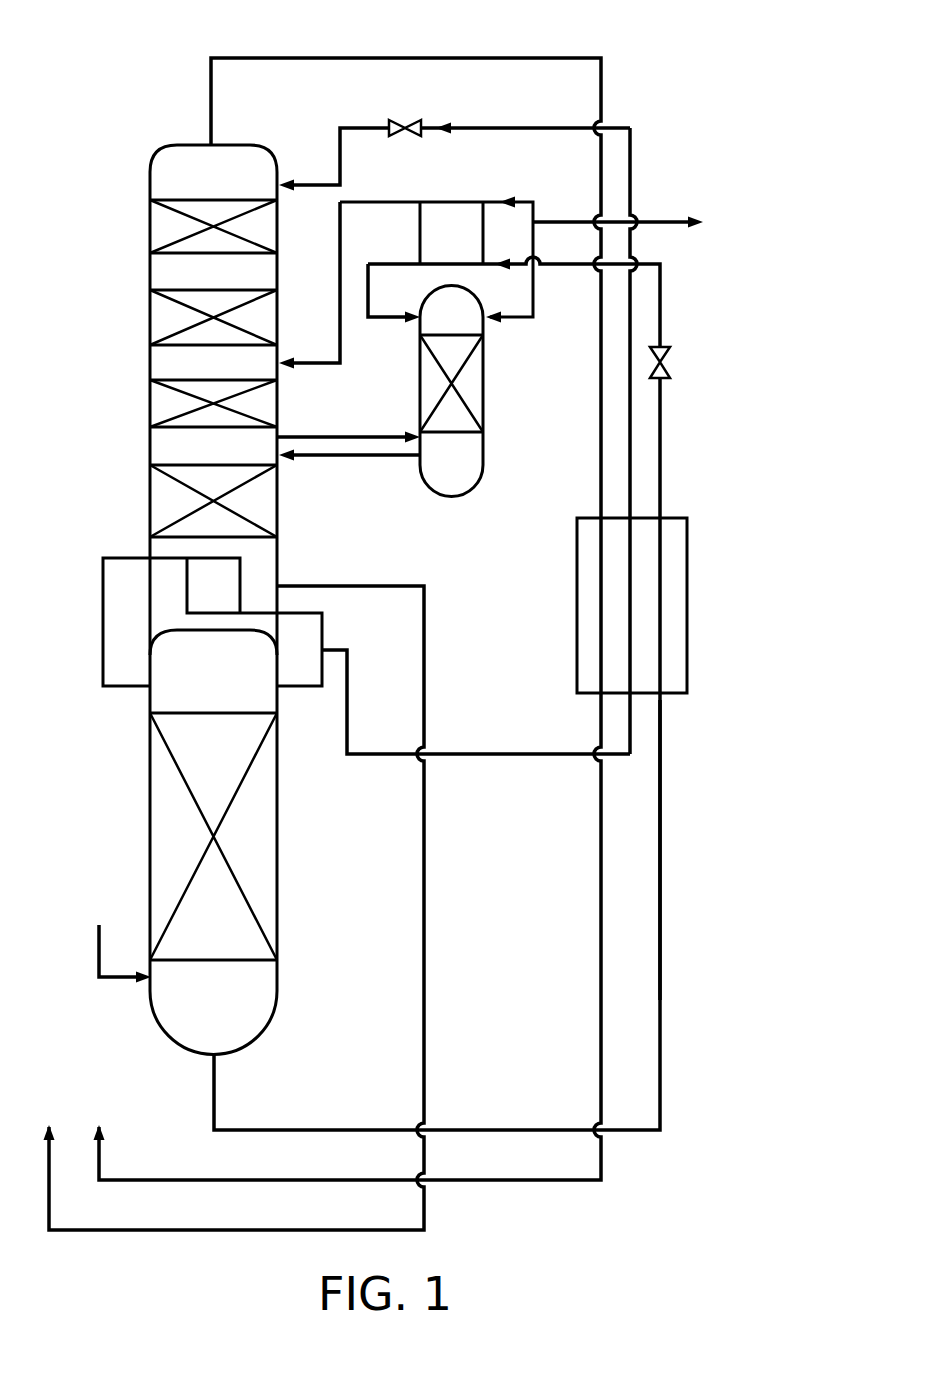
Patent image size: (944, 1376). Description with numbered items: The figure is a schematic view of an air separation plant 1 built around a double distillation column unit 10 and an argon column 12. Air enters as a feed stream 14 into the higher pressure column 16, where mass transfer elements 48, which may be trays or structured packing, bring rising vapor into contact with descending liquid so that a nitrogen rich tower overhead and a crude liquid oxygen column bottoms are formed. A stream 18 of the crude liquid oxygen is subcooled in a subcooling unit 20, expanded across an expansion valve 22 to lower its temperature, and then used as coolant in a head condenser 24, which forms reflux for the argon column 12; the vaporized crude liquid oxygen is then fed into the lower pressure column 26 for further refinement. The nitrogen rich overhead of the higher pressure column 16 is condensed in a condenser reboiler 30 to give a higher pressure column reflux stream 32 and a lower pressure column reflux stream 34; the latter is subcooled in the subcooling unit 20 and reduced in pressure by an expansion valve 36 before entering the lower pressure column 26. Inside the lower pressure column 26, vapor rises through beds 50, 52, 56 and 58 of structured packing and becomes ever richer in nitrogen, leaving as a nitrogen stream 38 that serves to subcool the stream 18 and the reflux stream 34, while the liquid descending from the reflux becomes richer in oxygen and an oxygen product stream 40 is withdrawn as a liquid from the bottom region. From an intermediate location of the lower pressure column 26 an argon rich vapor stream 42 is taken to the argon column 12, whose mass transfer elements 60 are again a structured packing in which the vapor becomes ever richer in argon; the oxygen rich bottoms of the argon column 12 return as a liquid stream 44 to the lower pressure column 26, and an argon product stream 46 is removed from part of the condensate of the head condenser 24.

The air separation plant 1 is at (710, 144).
The double distillation column unit 10 is at (66, 672).
The argon column 12 is at (451, 498).
The feed stream 14 is at (101, 981).
The higher pressure column 16 is at (279, 866).
The stream of crude liquid oxygen column bottoms 18 is at (664, 866).
The subcooling unit 20 is at (690, 562).
The expansion valve 22 is at (671, 364).
The head condenser 24 is at (418, 247).
The lower pressure column 26 is at (150, 372).
The condenser reboiler 30 is at (187, 586).
The higher pressure column reflux stream 32 is at (300, 688).
The lower pressure column reflux stream 34 is at (350, 700).
The expansion valve 36 is at (403, 120).
The nitrogen stream 38 is at (371, 57).
The oxygen product stream 40 is at (422, 1034).
The argon rich vapor stream 42 is at (326, 436).
The liquid stream 44 is at (384, 458).
The argon product stream 46 is at (655, 221).
The mass transfer elements 48 is at (162, 829).
The bed 50 is at (160, 510).
The bed 52 is at (155, 412).
The bed 56 is at (155, 327).
The bed 58 is at (155, 232).
The mass transfer elements 60 is at (477, 398).